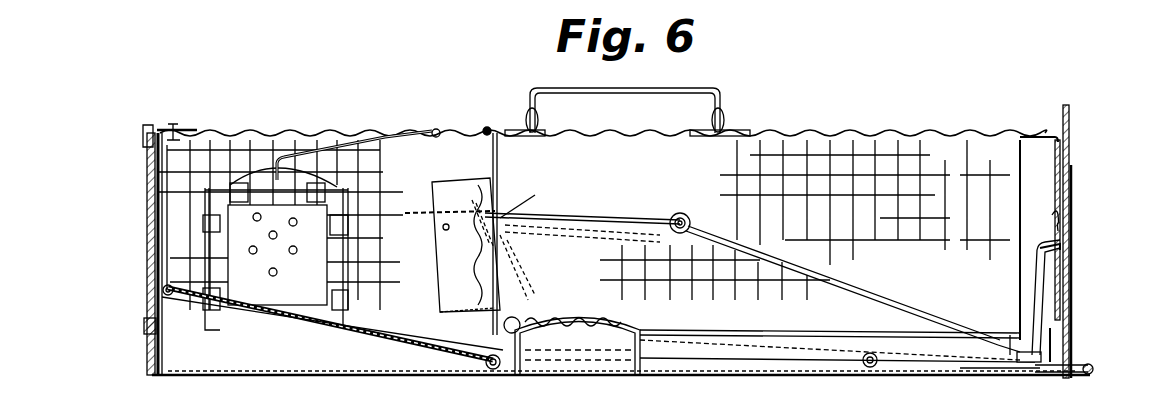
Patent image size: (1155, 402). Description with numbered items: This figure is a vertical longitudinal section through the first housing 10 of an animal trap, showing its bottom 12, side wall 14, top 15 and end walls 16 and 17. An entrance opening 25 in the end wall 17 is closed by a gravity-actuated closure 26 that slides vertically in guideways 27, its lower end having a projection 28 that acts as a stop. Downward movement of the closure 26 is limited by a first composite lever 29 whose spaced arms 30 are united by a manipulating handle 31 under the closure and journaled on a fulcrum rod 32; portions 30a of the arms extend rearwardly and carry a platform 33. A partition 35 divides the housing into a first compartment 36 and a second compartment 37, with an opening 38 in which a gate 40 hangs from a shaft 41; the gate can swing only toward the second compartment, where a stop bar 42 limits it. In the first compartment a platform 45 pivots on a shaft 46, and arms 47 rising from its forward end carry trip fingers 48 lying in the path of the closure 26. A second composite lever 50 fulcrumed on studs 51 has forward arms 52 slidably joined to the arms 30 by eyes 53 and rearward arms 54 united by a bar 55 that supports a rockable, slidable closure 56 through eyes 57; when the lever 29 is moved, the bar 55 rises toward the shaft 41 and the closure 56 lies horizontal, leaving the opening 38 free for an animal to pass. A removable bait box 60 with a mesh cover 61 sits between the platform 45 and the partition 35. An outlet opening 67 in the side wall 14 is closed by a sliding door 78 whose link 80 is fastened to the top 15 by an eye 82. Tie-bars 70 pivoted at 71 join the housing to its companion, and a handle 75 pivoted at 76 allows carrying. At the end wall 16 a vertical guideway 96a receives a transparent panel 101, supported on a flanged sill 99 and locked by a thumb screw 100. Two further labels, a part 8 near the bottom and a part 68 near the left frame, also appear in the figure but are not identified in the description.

The bottom 8 is at (895, 397).
The housing 10 is at (855, 137).
The bottom 12 is at (1012, 386).
The side wall 14 is at (990, 145).
The top 15 is at (940, 137).
The end wall 16 is at (156, 350).
The end wall 17 is at (1052, 152).
The entrance opening 25 is at (1053, 295).
The closure 26 is at (1070, 118).
The guideways 27 is at (1075, 206).
The projection 28 is at (1062, 236).
The first composite lever 29 is at (1075, 362).
The lever arms 30 is at (740, 358).
The portions of the arms 30a is at (398, 328).
The manipulating handle 31 is at (1095, 369).
The fulcrum rod 32 is at (485, 361).
The platform 33 is at (395, 325).
The partition 35 is at (498, 165).
The first compartment 36 is at (614, 173).
The second compartment 37 is at (416, 183).
The opening 38 is at (515, 261).
The gate 40 is at (500, 250).
The shaft 41 is at (478, 218).
The stop bar 42 is at (448, 228).
The platform 45 is at (822, 342).
The shaft 46 is at (878, 357).
The arms 47 is at (1036, 294).
The trip fingers 48 is at (1062, 248).
The second composite lever 50 is at (905, 293).
The studs 51 is at (670, 226).
The arms 52 is at (978, 318).
The eyes 53 is at (972, 380).
The arms 54 is at (605, 218).
The bar 55 is at (505, 215).
The closure 56 is at (455, 216).
The eyes 57 is at (503, 208).
The bait box 60 is at (572, 346).
The cover 61 is at (605, 312).
The outlet opening 67 is at (230, 248).
The frame 68 is at (306, 289).
The tie-bars 70 is at (180, 128).
The pivotal connection 71 is at (200, 133).
The handle 75 is at (722, 90).
The pivotal connection 76 is at (555, 137).
The door 78 is at (320, 250).
The link 80 is at (385, 130).
The eye 82 is at (395, 401).
The vertical guideway 96a is at (152, 289).
The flanged sill 99 is at (144, 325).
The thumb screw 100 is at (148, 131).
The transparent panel 101 is at (147, 200).